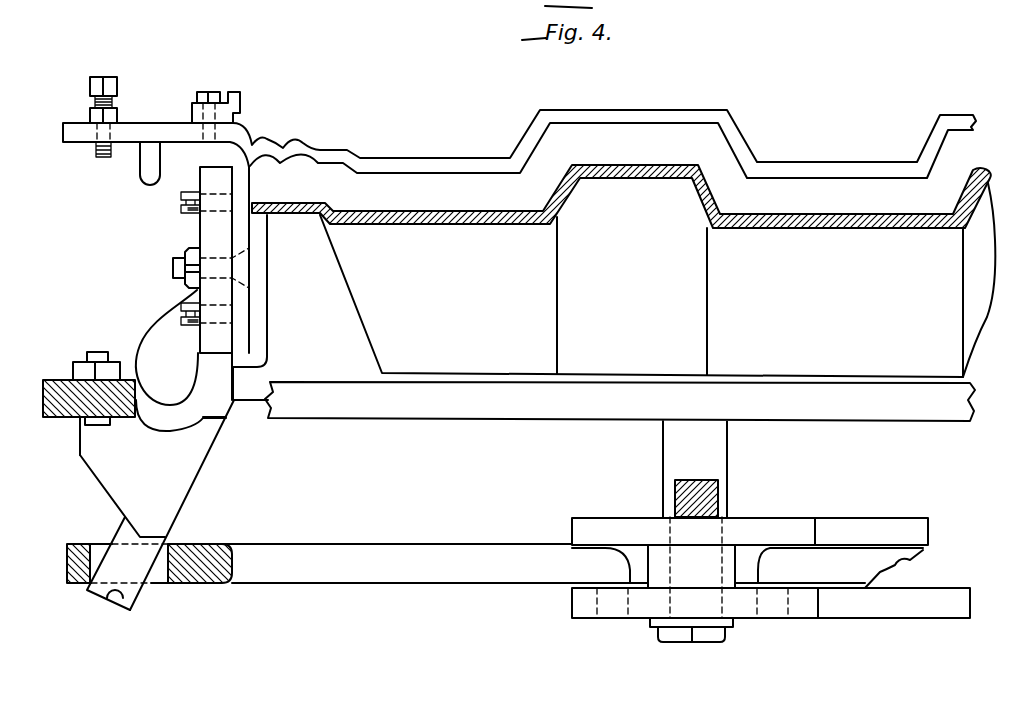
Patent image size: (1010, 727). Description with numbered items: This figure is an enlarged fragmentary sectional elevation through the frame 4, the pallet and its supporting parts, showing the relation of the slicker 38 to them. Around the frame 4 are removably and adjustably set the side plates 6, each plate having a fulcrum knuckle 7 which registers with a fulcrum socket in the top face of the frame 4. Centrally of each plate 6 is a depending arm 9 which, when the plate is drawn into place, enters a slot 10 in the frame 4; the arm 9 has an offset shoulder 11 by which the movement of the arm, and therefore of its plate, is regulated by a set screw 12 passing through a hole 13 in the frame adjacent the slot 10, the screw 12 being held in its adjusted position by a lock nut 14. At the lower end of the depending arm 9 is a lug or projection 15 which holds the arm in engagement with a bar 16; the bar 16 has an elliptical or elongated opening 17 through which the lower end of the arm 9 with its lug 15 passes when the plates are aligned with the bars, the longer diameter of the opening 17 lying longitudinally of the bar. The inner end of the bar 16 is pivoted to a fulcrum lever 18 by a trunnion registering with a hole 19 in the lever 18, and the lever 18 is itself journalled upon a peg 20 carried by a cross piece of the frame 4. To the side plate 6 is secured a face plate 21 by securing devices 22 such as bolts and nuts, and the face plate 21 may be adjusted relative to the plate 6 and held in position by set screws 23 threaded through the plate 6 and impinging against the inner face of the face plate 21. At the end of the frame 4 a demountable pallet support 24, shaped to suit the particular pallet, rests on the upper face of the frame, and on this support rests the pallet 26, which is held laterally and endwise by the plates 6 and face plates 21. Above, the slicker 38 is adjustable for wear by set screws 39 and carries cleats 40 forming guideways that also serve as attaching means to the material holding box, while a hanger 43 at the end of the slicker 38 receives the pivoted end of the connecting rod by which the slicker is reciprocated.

The frame 4 is at (70, 369).
The side plates 6 is at (204, 230).
The fulcrum knuckles 7 is at (148, 347).
The depending arms 9 is at (188, 468).
The slots 10 is at (140, 420).
The offset shoulders 11 is at (80, 435).
The set screws 12 is at (98, 355).
The holes 13 is at (43, 400).
The lock nuts 14 is at (73, 361).
The lugs 15 is at (120, 600).
The bars 16 is at (333, 547).
The elongated openings 17 is at (163, 580).
The fulcrum levers 18 is at (800, 518).
The holes 19 is at (663, 520).
The peg 20 is at (553, 421).
The face plates 21 is at (240, 326).
The securing devices 22 is at (175, 268).
The set screws 23 is at (183, 196).
The pallet support 24 is at (473, 373).
The pallet 26 is at (497, 223).
The slicker 38 is at (472, 160).
The set screws 39 is at (90, 88).
The cleats 40 is at (238, 92).
The hanger 43 is at (143, 165).